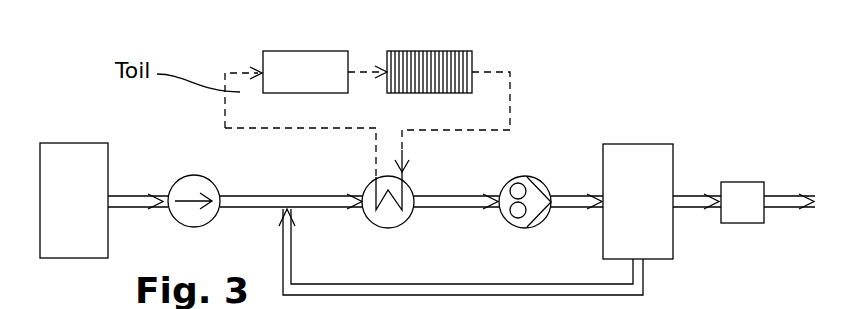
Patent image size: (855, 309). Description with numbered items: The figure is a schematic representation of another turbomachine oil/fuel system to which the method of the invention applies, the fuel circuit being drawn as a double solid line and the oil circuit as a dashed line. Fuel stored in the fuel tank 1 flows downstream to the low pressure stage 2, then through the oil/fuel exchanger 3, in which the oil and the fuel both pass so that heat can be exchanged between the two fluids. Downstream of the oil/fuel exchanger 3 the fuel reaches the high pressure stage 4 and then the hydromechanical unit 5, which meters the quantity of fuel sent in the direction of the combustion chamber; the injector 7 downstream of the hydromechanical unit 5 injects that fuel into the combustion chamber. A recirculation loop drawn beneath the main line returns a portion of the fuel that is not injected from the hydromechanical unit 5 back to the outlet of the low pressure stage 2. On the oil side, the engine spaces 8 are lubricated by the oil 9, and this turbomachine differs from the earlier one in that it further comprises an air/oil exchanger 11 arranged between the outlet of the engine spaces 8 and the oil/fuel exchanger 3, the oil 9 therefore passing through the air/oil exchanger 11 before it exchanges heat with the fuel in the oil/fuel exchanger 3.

The fuel tank 1 is at (75, 160).
The low pressure stage 2 is at (190, 187).
The oil/fuel exchanger 3 is at (388, 178).
The high pressure stage 4 is at (520, 165).
The hydromechanical unit 5 is at (645, 168).
The injector 7 is at (737, 186).
The engine spaces 8 is at (280, 60).
The oil 9 is at (492, 72).
The air/oil exchanger 11 is at (440, 51).